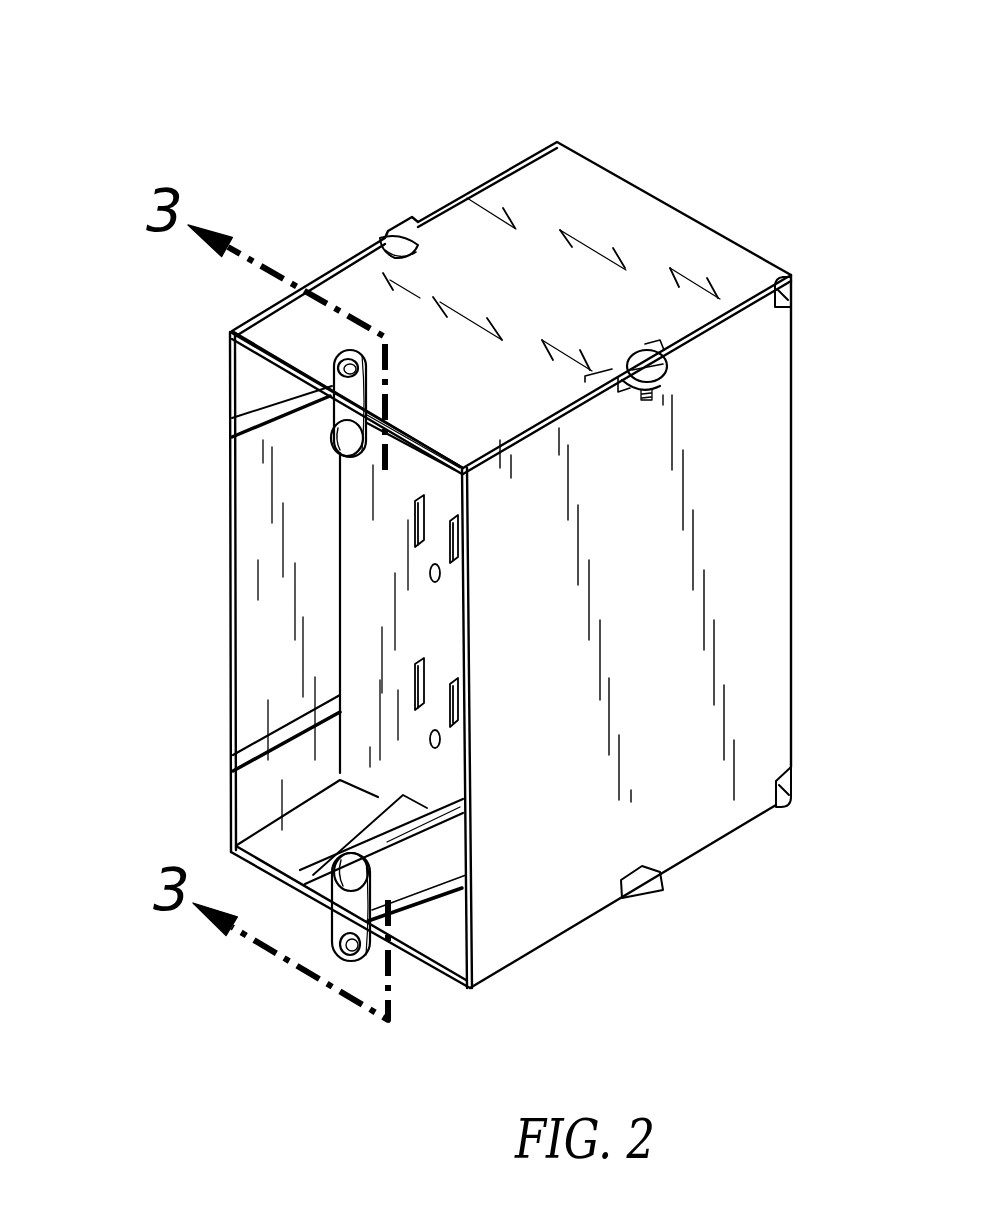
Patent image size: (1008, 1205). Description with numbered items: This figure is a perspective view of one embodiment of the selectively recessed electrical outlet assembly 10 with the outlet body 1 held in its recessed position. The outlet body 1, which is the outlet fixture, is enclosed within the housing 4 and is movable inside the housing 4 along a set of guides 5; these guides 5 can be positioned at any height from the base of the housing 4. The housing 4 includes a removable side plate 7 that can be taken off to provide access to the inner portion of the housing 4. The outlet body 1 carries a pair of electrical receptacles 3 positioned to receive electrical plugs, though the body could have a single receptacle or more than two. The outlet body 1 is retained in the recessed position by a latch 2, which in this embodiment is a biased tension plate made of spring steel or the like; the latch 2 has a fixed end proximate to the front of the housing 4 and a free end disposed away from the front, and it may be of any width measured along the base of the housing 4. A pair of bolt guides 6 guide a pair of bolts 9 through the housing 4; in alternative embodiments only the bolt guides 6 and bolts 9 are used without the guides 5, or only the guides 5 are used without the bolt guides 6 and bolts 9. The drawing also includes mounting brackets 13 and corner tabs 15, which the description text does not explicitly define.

The selectively recessed electrical outlet assembly 10 is at (722, 140).
The removable side plate 7 is at (358, 252).
The outlet body 1 is at (372, 603).
The housing 4 is at (245, 652).
The guides 5 is at (240, 770).
The latch 2 is at (320, 852).
The bolts 9 is at (367, 423).
The mounting bracket 13 is at (333, 360).
The bolt guides 6 is at (330, 433).
The electrical receptacles 3 is at (465, 528).
The tab 15 is at (796, 300).